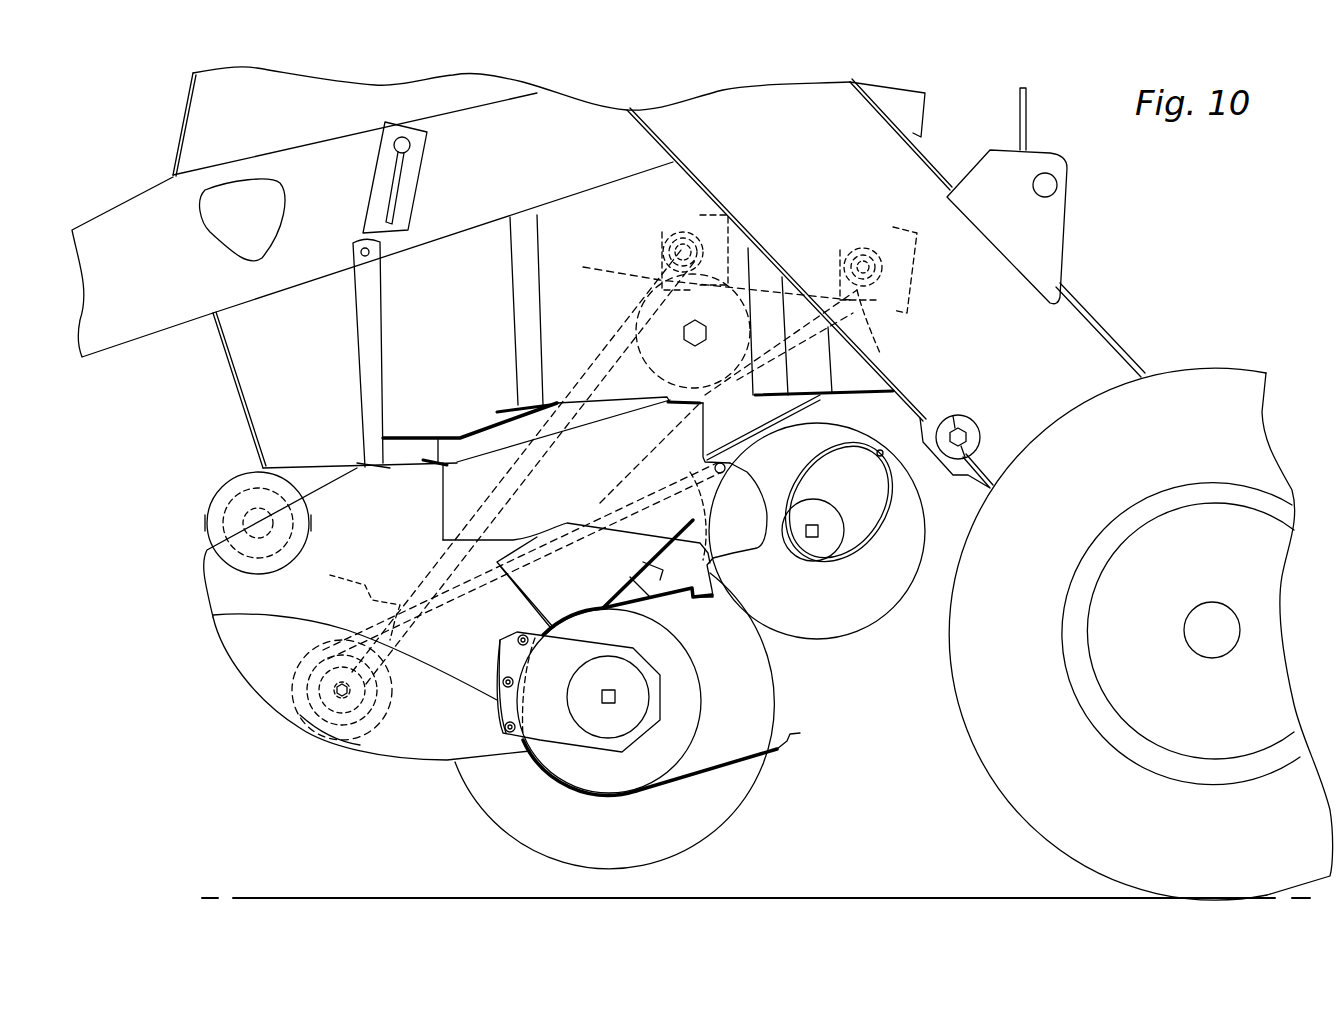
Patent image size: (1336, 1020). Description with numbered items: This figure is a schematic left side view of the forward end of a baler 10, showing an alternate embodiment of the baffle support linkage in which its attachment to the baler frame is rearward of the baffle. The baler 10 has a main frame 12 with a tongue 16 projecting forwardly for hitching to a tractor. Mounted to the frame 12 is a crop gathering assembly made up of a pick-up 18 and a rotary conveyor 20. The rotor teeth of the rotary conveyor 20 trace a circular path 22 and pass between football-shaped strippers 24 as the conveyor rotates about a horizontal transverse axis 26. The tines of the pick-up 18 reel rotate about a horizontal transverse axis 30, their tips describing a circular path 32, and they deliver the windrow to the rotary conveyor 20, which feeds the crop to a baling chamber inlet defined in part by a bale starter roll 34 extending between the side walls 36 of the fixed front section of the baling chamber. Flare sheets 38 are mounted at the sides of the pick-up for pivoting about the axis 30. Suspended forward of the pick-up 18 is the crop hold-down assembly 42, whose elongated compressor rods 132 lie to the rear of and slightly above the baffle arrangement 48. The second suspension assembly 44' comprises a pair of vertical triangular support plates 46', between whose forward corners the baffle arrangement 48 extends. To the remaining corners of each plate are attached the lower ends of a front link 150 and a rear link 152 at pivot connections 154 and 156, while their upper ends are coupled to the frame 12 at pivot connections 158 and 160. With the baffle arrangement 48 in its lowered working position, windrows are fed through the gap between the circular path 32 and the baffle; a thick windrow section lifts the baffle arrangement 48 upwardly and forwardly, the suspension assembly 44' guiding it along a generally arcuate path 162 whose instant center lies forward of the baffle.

The baler 10 is at (145, 104).
The tongue 16 is at (142, 284).
The main frame 12 is at (344, 324).
The side walls 36 is at (495, 283).
The pivot connection 158 is at (673, 223).
The front link 150 is at (665, 270).
The pivot connection 154 is at (696, 274).
The bale starter roll 34 is at (653, 303).
The rear link 152 is at (847, 280).
The pivot connection 160 is at (853, 243).
The pivot connection 156 is at (880, 353).
The suspension assembly 44' is at (543, 416).
The triangular support plates 46' is at (586, 481).
The crop hold-down assembly 42 is at (407, 565).
The arcuate path 162 is at (320, 633).
The compressor rods 132 is at (640, 548).
The strippers 24 is at (880, 523).
The horizontal transverse axis 26 is at (813, 537).
The horizontal transverse axis 30 is at (615, 697).
The circular path 22 is at (817, 643).
The rotary conveyor 20 is at (869, 648).
The flare sheets 38 is at (270, 667).
The baffle arrangement 48 is at (309, 752).
The circular path 32 is at (725, 817).
The pick-up 18 is at (828, 758).